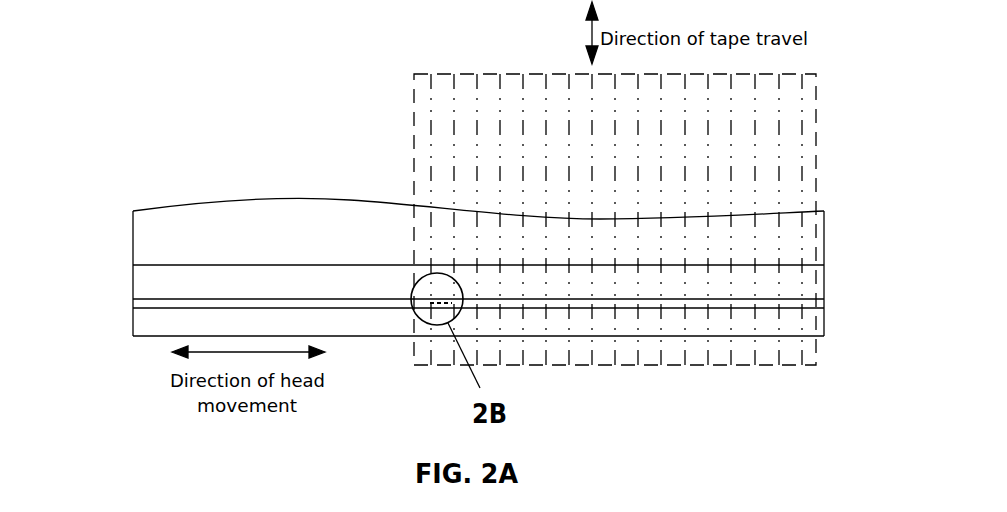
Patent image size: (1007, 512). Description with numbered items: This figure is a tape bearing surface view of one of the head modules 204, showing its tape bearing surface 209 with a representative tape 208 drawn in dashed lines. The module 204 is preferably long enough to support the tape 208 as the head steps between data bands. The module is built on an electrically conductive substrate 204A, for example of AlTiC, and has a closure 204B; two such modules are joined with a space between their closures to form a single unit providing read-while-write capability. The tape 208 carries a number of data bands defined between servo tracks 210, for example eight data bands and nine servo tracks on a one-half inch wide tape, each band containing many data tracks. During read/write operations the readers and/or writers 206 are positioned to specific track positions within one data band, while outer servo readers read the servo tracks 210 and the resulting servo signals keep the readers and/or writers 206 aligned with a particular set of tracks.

The module 204 is at (171, 182).
The electrically conductive substrate 204A is at (264, 198).
The closure 204B is at (133, 323).
The readers and/or writers 206 is at (406, 301).
The tape 208 is at (413, 78).
The tape bearing surface 209 is at (322, 288).
The servo tracks 210 is at (521, 158).